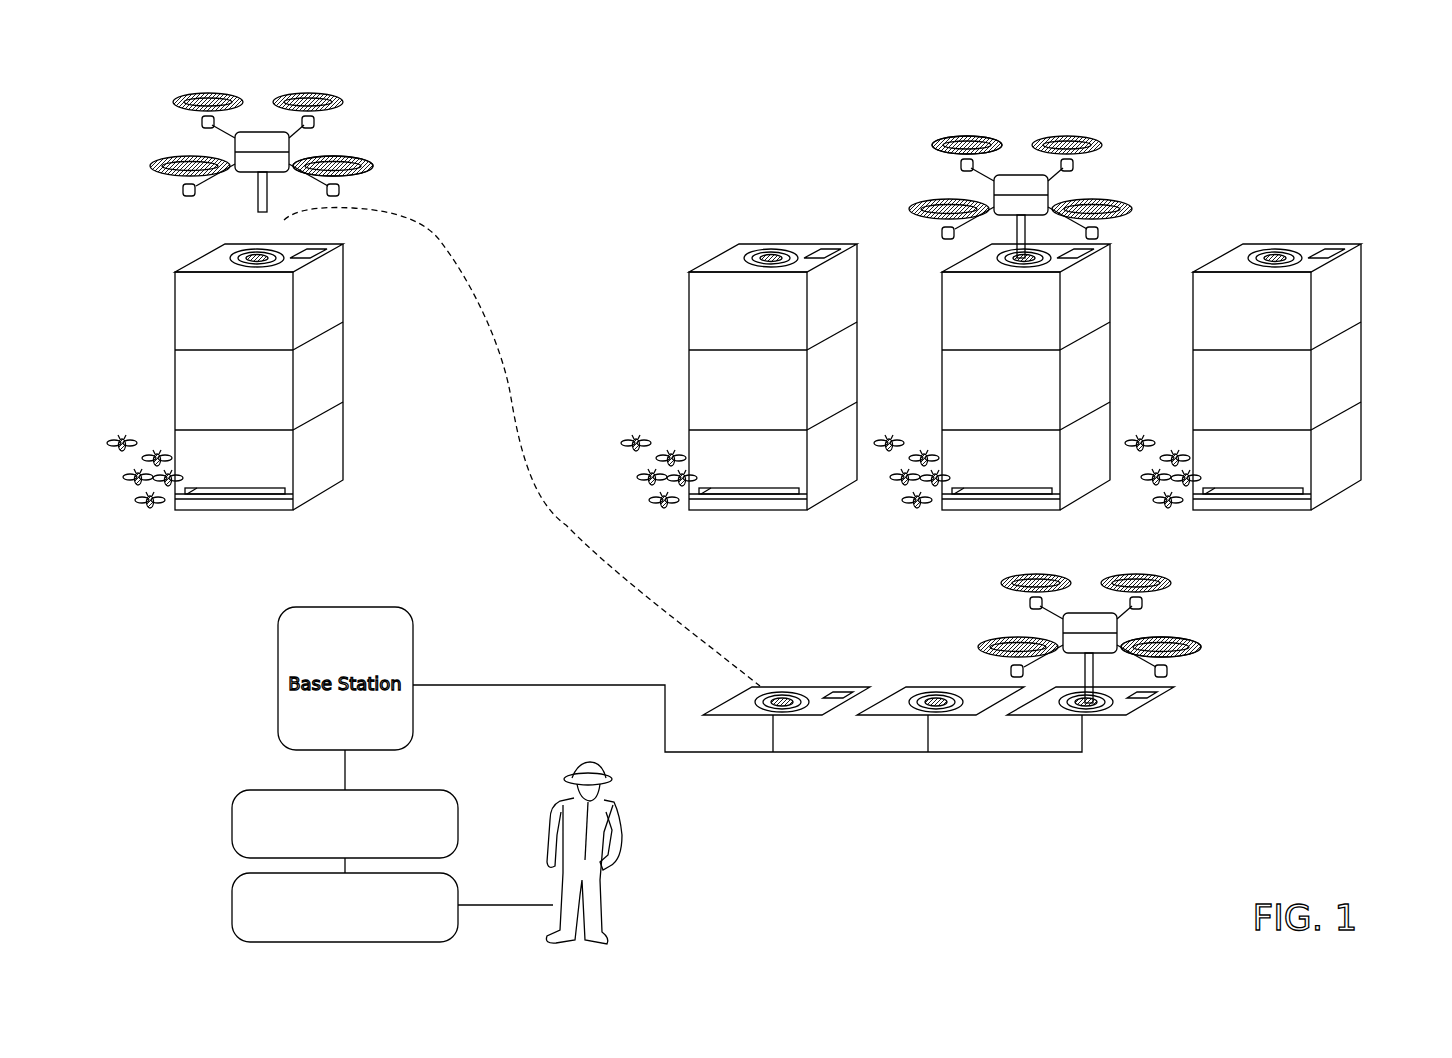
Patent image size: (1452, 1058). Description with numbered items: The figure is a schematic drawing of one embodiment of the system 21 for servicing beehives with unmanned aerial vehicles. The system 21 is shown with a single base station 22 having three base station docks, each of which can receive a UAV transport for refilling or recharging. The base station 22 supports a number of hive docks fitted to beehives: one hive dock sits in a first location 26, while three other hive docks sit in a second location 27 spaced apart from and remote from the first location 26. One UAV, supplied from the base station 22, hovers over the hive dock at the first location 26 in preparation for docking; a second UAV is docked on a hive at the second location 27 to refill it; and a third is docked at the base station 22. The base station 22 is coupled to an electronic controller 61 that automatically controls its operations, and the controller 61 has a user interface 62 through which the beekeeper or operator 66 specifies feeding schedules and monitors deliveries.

The system 21 is at (1030, 281).
The base station 22 is at (438, 582).
The first location 26 is at (255, 146).
The second location 27 is at (1030, 294).
The controller 61 is at (232, 825).
The user interface 62 is at (232, 918).
The operator 66 is at (622, 848).